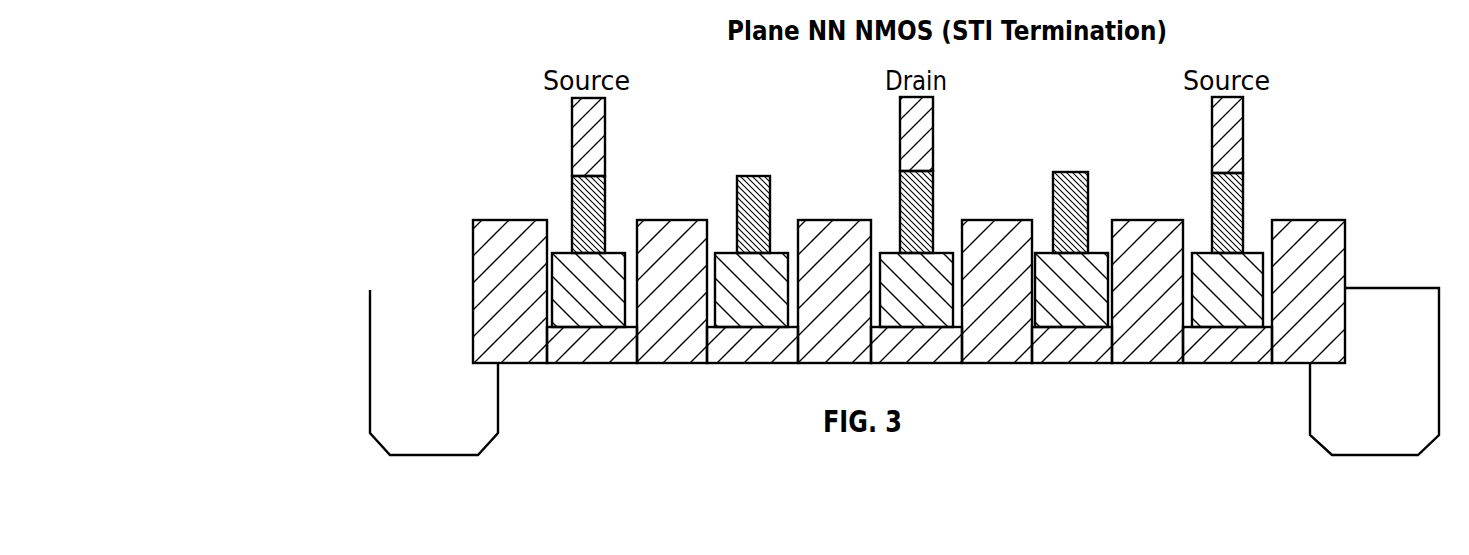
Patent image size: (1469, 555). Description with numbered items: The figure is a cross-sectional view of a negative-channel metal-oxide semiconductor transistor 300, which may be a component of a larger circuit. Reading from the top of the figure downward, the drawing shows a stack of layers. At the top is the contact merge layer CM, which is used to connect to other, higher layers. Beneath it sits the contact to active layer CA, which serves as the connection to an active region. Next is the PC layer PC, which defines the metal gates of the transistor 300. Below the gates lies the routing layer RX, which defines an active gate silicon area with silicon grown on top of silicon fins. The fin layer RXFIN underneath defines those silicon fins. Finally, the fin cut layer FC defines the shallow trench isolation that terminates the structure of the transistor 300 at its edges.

The plane NN NMOS with STI termination 300 is at (1316, 64).
The contact metal CM is at (572, 138).
The contact CA is at (572, 213).
The polysilicon gate conductor PC is at (473, 238).
The silicon active region RX is at (473, 290).
The silicon fin region RXFIN is at (528, 345).
The shallow trench isolation FC is at (425, 432).